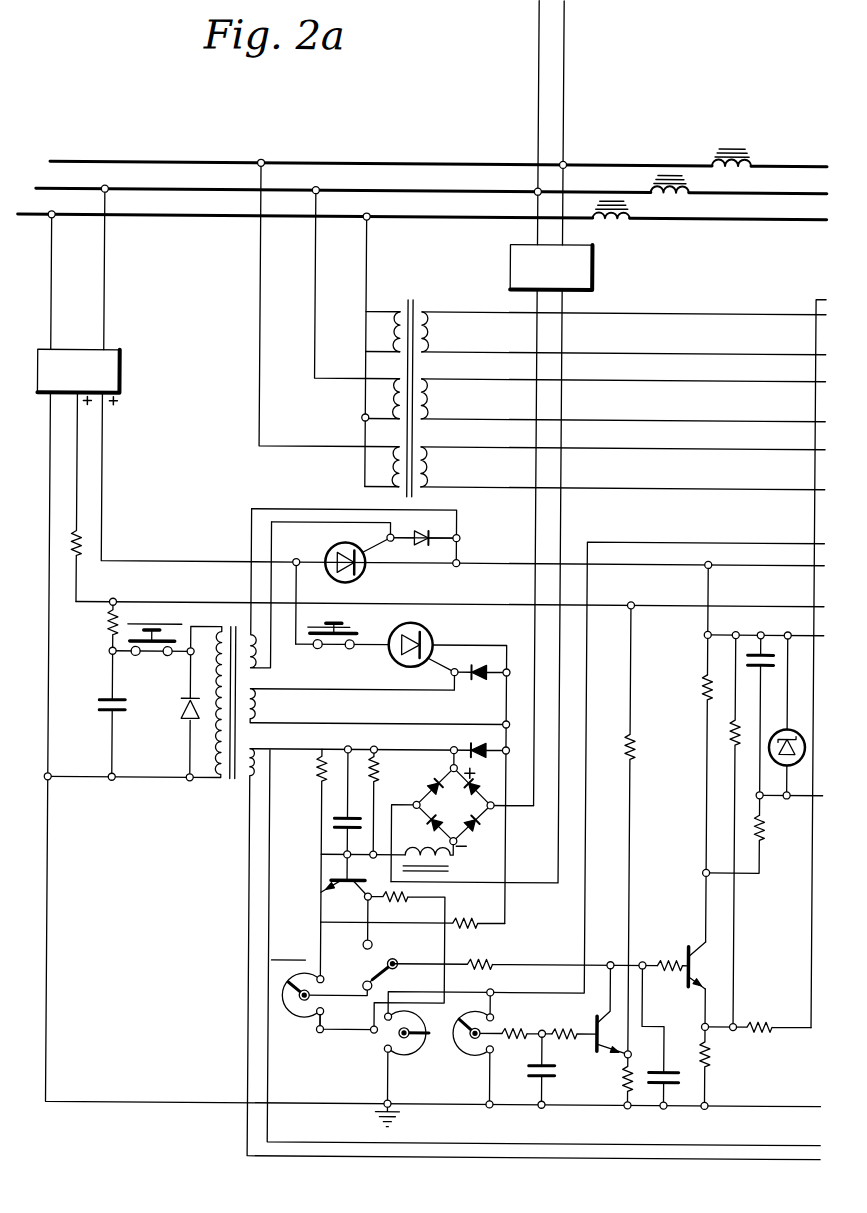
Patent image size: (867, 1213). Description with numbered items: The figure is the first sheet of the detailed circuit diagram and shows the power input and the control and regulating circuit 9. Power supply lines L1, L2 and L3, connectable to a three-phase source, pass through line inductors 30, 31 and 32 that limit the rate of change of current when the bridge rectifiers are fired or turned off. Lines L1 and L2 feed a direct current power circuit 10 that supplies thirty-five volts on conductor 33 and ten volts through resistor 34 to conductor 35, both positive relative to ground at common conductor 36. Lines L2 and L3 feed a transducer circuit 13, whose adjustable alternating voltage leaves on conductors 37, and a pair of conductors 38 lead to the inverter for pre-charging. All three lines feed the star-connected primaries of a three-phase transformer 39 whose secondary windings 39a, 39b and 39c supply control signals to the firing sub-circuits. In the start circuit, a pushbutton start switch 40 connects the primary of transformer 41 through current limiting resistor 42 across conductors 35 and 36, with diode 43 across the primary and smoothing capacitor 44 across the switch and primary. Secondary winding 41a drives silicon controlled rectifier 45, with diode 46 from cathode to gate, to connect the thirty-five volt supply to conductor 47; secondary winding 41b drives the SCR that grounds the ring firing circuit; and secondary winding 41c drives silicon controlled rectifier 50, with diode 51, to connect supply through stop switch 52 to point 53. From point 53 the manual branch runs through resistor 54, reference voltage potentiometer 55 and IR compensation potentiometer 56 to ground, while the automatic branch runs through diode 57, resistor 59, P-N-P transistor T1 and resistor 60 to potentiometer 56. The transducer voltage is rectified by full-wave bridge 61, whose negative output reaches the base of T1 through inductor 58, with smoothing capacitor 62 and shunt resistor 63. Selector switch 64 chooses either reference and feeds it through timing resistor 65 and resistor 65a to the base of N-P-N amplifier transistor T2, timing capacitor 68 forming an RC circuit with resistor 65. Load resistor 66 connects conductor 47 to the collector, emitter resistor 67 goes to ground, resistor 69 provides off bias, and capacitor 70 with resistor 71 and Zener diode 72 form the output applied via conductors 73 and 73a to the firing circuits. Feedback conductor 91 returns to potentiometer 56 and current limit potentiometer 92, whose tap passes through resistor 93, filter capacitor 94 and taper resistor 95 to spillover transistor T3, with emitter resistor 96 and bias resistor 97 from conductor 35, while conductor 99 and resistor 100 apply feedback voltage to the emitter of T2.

The power supply line L1 is at (19, 215).
The power supply line L2 is at (40, 188).
The power supply line L3 is at (62, 162).
The control and regulating circuit 9 is at (499, 555).
The direct current power circuit 10 is at (78, 350).
The transducer circuit 13 is at (592, 268).
The line inductor 30 is at (610, 224).
The line inductor 31 is at (678, 196).
The line inductor 32 is at (740, 170).
The conductor 33 is at (152, 561).
The resistor 34 is at (80, 556).
The conductor 35 is at (197, 603).
The common conductor 36 is at (48, 455).
The conductors 37 is at (538, 507).
The conductors 38 is at (538, 53).
The three-phase transformer 39 is at (418, 302).
The secondary winding 39a is at (435, 468).
The secondary winding 39b is at (435, 402).
The secondary winding 39c is at (435, 337).
The start switch 40 is at (151, 659).
The transformer 41 is at (233, 630).
The secondary winding 41a is at (272, 670).
The secondary winding 41b is at (268, 745).
The secondary winding 41c is at (262, 706).
The current limiting resistor 42 is at (110, 635).
The unidirectional diode 43 is at (182, 714).
The smoothing capacitor 44 is at (97, 712).
The silicon controlled rectifier 45 is at (326, 552).
The unidirectional diode 46 is at (424, 534).
The conductor 47 is at (630, 563).
The silicon controlled rectifier 50 is at (426, 632).
The unidirectional diode 51 is at (478, 680).
The stop switch 52 is at (342, 655).
The point 53 is at (510, 745).
The resistor 54 is at (465, 921).
The reference voltage potentiometer 55 is at (303, 1020).
The IR compensation potentiometer 56 is at (386, 1040).
The unidirectional diode 57 is at (470, 748).
The inductor 58 is at (452, 871).
The resistor 59 is at (318, 775).
The resistor 60 is at (395, 903).
The full-wave rectifier bridge 61 is at (462, 814).
The smoothing capacitor 62 is at (333, 825).
The shunt resistor 63 is at (385, 776).
The selector switch 64 is at (388, 965).
The timing resistor 65 is at (492, 964).
The resistor 65a is at (678, 957).
The load resistor 66 is at (700, 688).
The resistor 67 is at (712, 1058).
The timing capacitor 68 is at (653, 1068).
The resistor 69 is at (736, 745).
The capacitor 70 is at (758, 665).
The resistor 71 is at (763, 839).
The Zener diode 72 is at (783, 727).
The conductor 73 is at (787, 633).
The conductor 73a is at (800, 795).
The conductor 91 is at (770, 541).
The current limit potentiometer 92 is at (477, 1019).
The resistor 93 is at (518, 1031).
The filter capacitor 94 is at (536, 1075).
The taper resistor 95 is at (569, 1031).
The resistor 96 is at (620, 1080).
The resistor 97 is at (634, 760).
The conductor 99 is at (812, 300).
The resistor 100 is at (765, 1018).
The P-N-P transistor T1 is at (344, 900).
The N-P-N transistor T2 is at (694, 966).
The current limit spillover transistor T3 is at (613, 1009).